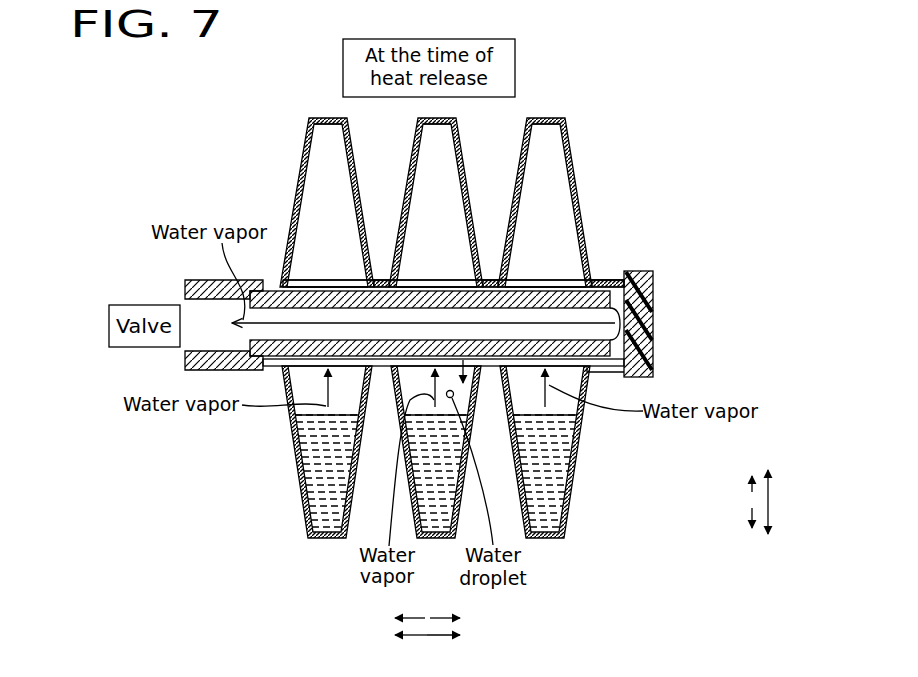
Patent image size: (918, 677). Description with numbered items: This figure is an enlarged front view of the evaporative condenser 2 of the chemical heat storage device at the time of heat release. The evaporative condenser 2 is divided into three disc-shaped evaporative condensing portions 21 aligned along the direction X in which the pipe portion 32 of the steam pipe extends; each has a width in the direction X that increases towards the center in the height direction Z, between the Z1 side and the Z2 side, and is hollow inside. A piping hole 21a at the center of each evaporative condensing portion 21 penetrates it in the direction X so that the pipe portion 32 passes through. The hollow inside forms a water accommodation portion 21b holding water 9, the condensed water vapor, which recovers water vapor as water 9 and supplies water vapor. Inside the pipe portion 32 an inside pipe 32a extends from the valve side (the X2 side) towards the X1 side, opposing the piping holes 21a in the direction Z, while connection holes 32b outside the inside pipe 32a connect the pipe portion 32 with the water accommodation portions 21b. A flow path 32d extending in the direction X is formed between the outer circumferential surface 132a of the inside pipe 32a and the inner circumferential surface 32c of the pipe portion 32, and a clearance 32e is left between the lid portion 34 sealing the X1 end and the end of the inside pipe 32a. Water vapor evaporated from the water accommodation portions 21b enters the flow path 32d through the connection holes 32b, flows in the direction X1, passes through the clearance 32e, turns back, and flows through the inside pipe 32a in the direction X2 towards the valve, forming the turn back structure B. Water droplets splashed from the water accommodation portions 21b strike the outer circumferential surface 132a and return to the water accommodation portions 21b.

The evaporative condenser 2 is at (598, 112).
The water 9 is at (325, 540).
The evaporative condensing portion 21 is at (303, 136).
The piping hole 21a is at (282, 278).
The water accommodation portion 21b is at (445, 128).
The pipe portion 32 is at (598, 283).
The inside pipe 32a is at (612, 298).
The connection hole 32b is at (360, 283).
The inner circumferential surface 32c is at (628, 352).
The flow path 32d is at (614, 286).
The clearance 32e is at (626, 303).
The lid portion 34 is at (640, 372).
The outer circumferential surface 132a is at (270, 367).
The turn back structure B is at (614, 318).
The direction X is at (427, 648).
The X1 direction X1 is at (445, 604).
The X2 direction X2 is at (410, 604).
The direction Z is at (780, 502).
The Z1 direction Z1 is at (736, 486).
The Z2 direction Z2 is at (736, 519).